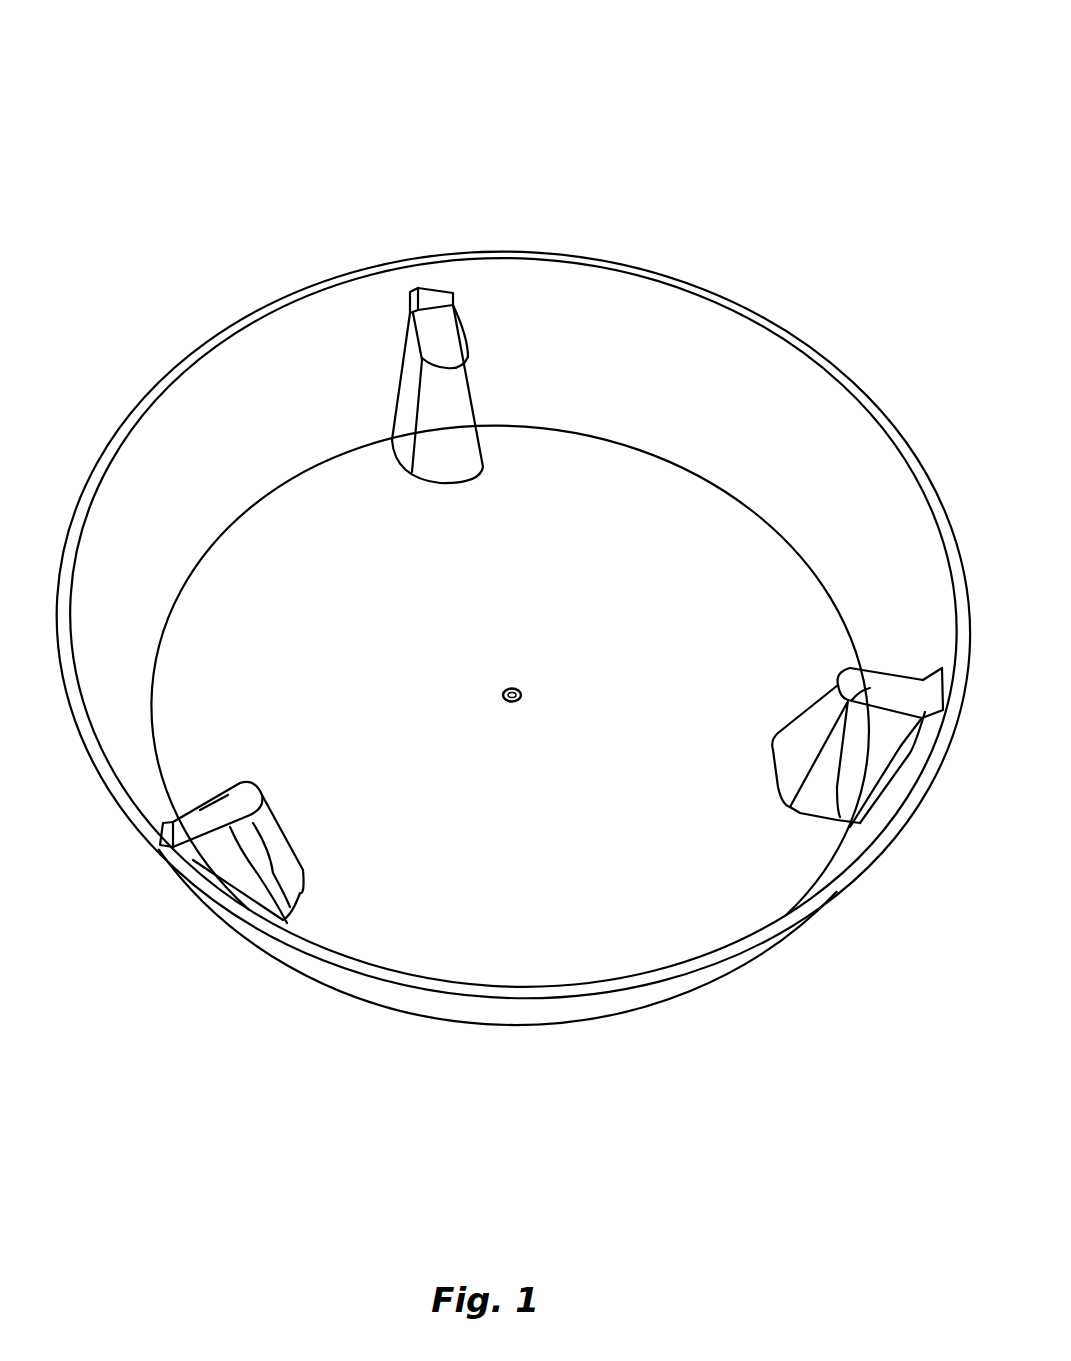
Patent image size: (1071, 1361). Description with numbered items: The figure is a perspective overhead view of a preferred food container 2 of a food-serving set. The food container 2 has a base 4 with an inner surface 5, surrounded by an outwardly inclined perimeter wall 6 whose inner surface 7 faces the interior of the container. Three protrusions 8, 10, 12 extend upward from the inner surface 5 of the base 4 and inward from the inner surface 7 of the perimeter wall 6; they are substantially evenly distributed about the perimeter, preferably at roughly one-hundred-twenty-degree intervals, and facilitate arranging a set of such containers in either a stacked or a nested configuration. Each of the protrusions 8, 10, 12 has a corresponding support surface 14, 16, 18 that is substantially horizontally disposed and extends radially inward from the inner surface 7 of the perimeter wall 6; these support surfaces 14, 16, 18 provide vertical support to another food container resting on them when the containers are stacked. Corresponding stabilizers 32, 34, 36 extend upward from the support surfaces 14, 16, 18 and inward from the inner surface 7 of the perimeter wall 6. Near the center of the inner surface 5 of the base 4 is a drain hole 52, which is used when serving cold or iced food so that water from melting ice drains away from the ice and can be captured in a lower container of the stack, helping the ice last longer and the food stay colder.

The food container 2 is at (835, 51).
The base 4 is at (731, 526).
The inner surface 5 is at (333, 664).
The perimeter wall 6 is at (667, 380).
The inner surface 7 is at (131, 592).
The protrusion 8 is at (506, 291).
The protrusion 10 is at (804, 872).
The protrusion 12 is at (344, 952).
The support surface 14 is at (453, 327).
The support surface 16 is at (868, 703).
The support surface 18 is at (212, 826).
The stabilizer 32 is at (436, 285).
The stabilizer 34 is at (920, 730).
The stabilizer 36 is at (190, 862).
The drain hole 52 is at (517, 718).